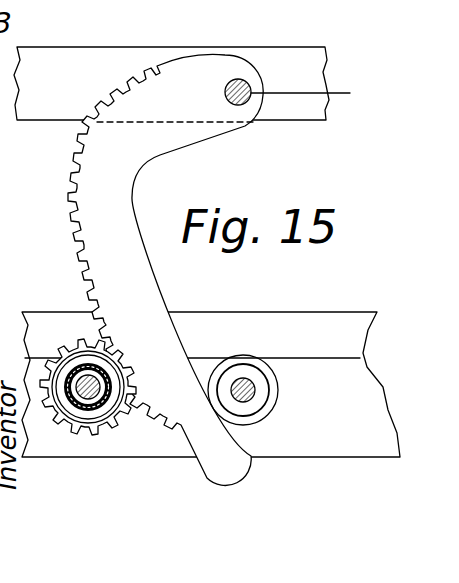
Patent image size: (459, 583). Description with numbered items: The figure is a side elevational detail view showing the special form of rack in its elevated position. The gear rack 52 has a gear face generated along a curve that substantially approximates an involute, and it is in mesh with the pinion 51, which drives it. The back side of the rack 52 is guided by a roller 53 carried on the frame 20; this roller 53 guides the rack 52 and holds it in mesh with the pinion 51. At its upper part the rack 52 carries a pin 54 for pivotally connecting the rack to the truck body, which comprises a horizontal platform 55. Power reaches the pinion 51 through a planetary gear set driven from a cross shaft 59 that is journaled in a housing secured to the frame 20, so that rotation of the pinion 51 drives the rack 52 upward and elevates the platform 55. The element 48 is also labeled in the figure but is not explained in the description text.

The lever 48 is at (53, 0).
The link bar 55 is at (306, 52).
The pivot pin 54 is at (305, 92).
The toothed sector arm 52 is at (88, 228).
The pinion gear 51 is at (68, 342).
The shaft 59 is at (92, 410).
The roller 53 is at (267, 370).
The frame plate 20 is at (352, 341).